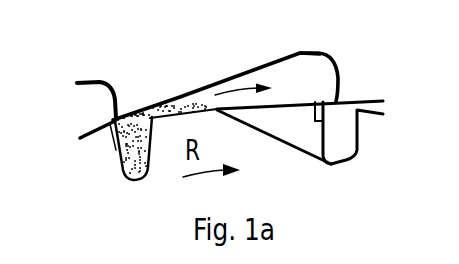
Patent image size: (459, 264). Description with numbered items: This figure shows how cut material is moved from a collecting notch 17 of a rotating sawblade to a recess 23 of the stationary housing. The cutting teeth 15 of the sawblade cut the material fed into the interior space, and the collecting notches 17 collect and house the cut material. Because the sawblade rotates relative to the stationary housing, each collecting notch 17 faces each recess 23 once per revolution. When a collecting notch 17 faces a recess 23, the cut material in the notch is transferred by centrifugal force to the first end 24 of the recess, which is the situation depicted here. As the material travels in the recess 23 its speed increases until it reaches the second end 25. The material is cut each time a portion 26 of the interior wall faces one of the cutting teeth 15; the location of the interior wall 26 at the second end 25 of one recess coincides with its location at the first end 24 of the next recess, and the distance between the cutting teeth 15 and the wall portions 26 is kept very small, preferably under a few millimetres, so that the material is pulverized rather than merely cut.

The cutting tooth 15 is at (113, 118).
The collecting notch 17 is at (140, 176).
The recess 23 is at (278, 75).
The first end of the recess 24 is at (125, 113).
The second end of the recess 25 is at (338, 70).
The portion of the interior wall 26 is at (113, 117).